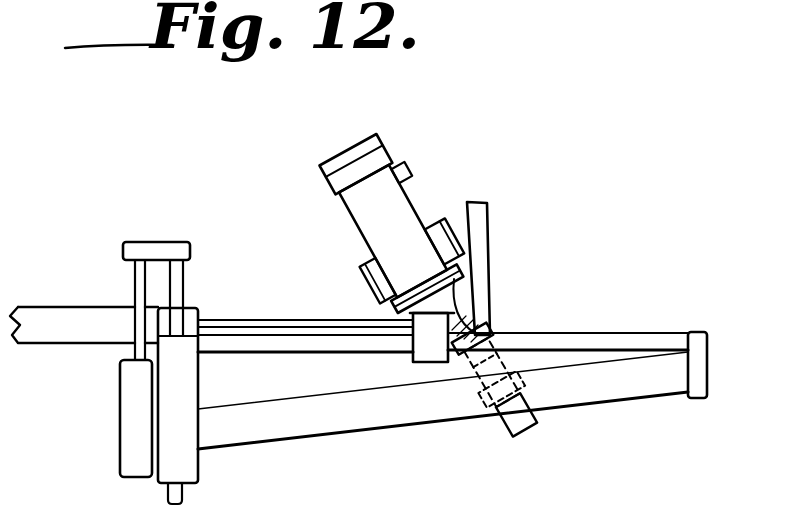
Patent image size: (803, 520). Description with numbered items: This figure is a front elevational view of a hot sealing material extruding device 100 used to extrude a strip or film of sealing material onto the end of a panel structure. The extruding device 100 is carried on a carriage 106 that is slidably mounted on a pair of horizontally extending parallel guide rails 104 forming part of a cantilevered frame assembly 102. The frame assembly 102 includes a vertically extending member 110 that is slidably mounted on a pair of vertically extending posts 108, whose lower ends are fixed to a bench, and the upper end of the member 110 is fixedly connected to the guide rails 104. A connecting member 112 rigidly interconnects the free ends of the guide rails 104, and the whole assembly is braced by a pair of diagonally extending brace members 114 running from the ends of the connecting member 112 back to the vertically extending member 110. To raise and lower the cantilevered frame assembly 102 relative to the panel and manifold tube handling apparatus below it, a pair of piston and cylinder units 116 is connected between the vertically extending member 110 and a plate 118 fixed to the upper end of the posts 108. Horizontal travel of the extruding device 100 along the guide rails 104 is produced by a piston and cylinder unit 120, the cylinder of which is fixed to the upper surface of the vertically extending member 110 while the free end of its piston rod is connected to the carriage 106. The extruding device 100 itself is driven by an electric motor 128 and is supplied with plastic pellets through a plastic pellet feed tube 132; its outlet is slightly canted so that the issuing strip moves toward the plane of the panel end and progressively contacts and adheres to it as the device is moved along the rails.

The extruding device 100 is at (414, 197).
The cantilevered frame assembly 102 is at (618, 332).
The guide rails 104 is at (578, 299).
The carriage 106 is at (425, 352).
The vertically extending posts 108 is at (178, 283).
The vertically extending member 110 is at (183, 426).
The connecting member 112 is at (707, 368).
The brace members 114 is at (605, 389).
The piston and cylinder units 116 is at (130, 435).
The plate 118 is at (172, 243).
The piston and cylinder unit 120 is at (94, 320).
The electric motor 128 is at (370, 227).
The plastic pellet feed tube 132 is at (483, 228).